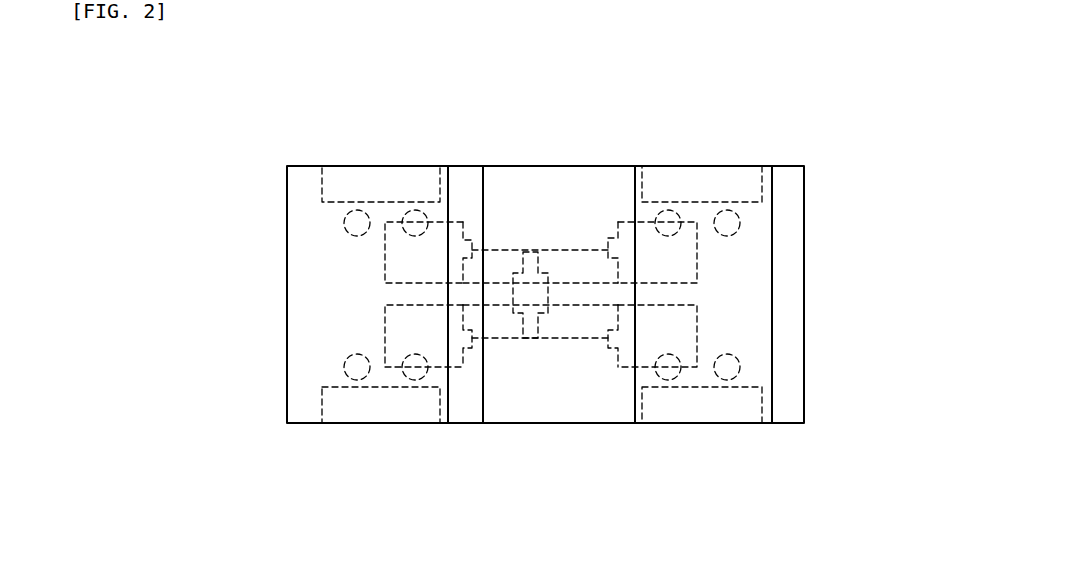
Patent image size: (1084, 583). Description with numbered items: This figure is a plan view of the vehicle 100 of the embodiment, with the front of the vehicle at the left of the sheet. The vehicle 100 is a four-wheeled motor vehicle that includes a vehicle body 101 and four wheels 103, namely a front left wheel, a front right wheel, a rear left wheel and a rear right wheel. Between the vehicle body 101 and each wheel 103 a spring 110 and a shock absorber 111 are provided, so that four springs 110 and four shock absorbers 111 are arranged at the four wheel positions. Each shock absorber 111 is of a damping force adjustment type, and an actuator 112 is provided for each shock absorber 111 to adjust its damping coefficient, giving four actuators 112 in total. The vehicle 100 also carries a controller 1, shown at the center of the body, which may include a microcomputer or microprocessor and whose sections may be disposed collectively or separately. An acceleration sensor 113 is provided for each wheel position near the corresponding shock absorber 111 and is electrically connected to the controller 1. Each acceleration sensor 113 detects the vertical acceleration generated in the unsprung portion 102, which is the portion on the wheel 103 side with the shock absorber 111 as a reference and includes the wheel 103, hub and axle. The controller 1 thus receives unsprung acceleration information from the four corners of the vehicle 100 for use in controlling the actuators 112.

The controller 1 is at (531, 260).
The vehicle 100 is at (845, 172).
The vehicle body 101 is at (287, 195).
The unsprung portion 102 is at (313, 183).
The wheel 103 is at (380, 182).
The spring 110 is at (358, 207).
The shock absorber 111 is at (411, 210).
The actuator 112 is at (455, 252).
The acceleration sensor 113 is at (383, 220).